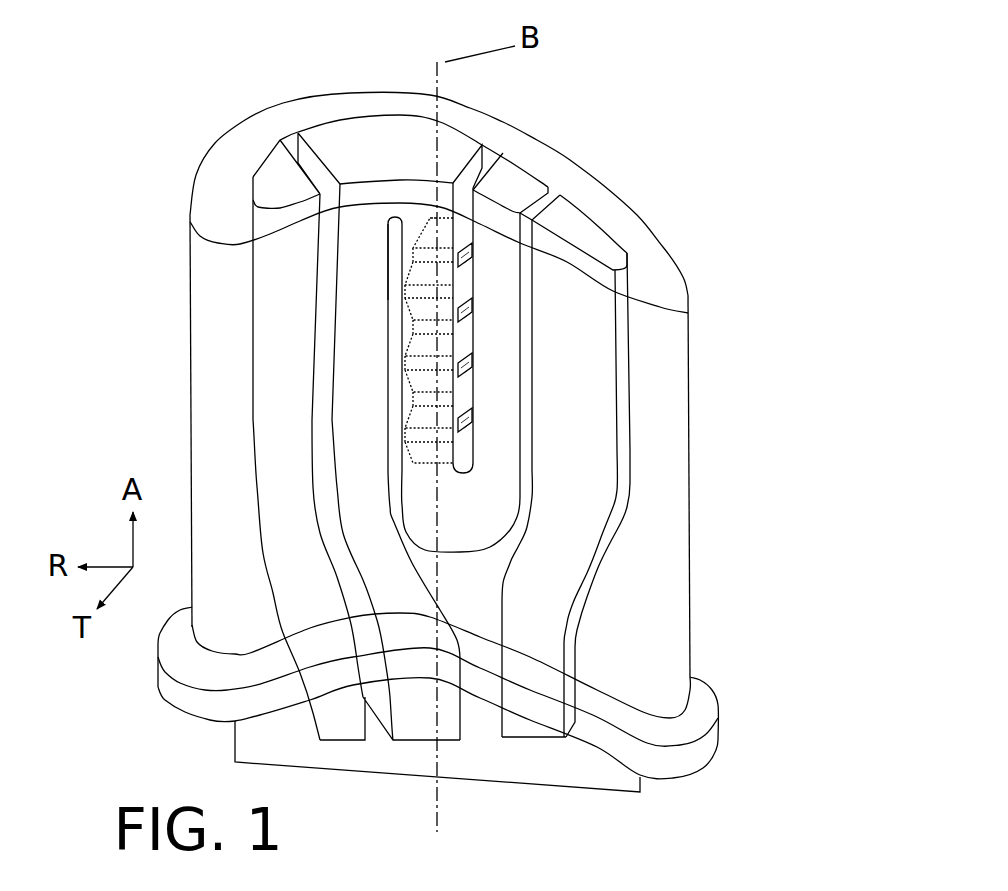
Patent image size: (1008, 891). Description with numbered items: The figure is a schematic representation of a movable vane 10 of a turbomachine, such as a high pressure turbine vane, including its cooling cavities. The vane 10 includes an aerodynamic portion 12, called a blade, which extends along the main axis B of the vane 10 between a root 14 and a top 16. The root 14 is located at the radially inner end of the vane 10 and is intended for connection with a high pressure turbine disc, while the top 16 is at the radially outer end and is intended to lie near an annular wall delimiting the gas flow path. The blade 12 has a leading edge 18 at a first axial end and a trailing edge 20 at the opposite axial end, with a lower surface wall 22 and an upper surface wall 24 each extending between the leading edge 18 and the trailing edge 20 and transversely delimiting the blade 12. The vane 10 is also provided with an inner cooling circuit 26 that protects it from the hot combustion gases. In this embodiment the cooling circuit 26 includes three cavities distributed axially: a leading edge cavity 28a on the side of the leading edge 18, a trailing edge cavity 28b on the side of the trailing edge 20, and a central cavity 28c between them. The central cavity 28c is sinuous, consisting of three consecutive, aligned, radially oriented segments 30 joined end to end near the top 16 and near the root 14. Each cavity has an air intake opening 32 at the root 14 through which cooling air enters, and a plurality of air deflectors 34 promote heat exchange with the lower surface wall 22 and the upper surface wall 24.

The movable vane 10 is at (716, 154).
The aerodynamic portion 12 is at (752, 350).
The root 14 is at (697, 789).
The top 16 is at (537, 155).
The leading edge 18 is at (185, 243).
The trailing edge 20 is at (688, 318).
The lower surface wall 22 is at (260, 448).
The upper surface wall 24 is at (485, 107).
The inner cooling circuit 26 is at (346, 106).
The leading edge cavity 28a is at (260, 162).
The trailing edge cavity 28b is at (585, 212).
The central cavity 28c is at (385, 141).
The segment 30 is at (363, 327).
The air intake opening 32 is at (517, 733).
The air deflector 34 is at (470, 353).